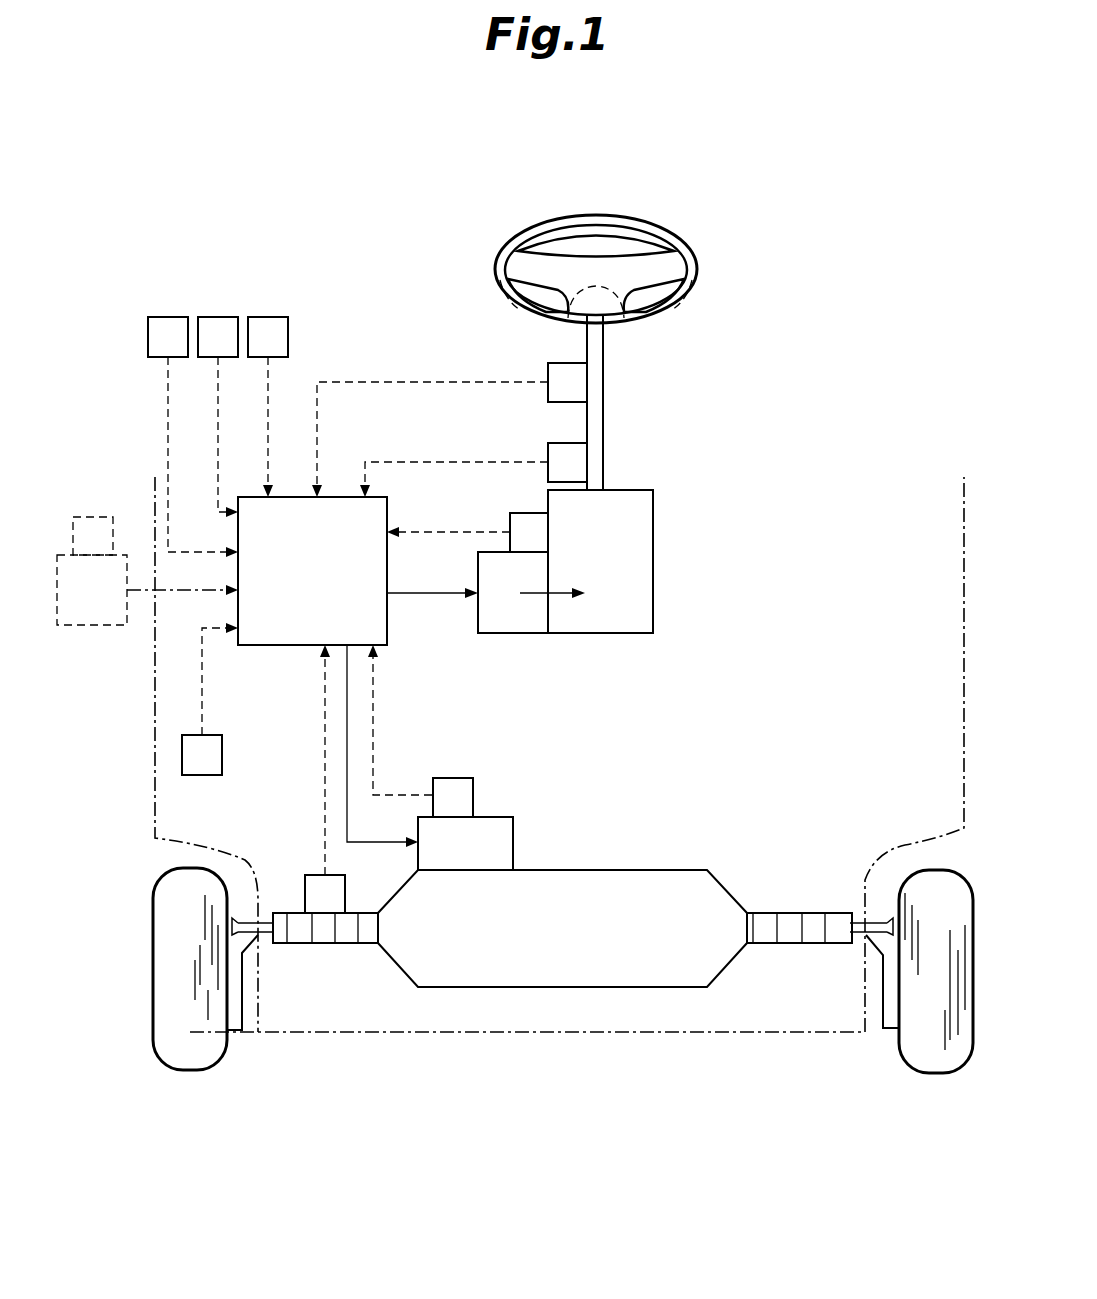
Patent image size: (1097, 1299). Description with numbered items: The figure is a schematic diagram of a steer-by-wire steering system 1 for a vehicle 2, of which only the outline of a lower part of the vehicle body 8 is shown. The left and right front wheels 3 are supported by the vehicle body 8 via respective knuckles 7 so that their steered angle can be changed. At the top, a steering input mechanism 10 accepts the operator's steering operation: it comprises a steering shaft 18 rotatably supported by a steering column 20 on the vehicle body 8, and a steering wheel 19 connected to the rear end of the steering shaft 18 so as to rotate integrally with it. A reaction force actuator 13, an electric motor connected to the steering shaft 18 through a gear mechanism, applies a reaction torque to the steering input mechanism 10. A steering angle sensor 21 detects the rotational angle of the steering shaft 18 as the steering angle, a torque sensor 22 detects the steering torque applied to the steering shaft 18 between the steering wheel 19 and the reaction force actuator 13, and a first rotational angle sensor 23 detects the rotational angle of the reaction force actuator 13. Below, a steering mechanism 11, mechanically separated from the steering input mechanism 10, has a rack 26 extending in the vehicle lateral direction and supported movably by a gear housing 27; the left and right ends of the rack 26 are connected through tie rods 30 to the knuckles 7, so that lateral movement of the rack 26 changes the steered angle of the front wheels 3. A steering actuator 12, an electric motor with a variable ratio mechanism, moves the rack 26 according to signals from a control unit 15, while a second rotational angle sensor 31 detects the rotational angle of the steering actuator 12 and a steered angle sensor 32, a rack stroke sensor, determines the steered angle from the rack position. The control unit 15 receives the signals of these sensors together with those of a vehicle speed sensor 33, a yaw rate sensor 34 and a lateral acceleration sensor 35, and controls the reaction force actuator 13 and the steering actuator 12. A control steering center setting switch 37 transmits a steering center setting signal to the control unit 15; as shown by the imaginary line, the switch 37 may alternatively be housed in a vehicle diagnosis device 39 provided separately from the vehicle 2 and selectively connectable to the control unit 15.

The steering system 1 is at (478, 223).
The vehicle 2 is at (296, 145).
The front wheels 3 is at (185, 1071).
The knuckles 7 is at (247, 1032).
The vehicle body 8 is at (750, 1034).
The steering input mechanism 10 is at (645, 253).
The steering mechanism 11 is at (547, 934).
The steering actuator 12 is at (513, 840).
The reaction force actuator 13 is at (513, 634).
The control unit 15 is at (258, 648).
The steering shaft 18 is at (600, 404).
The steering wheel 19 is at (668, 300).
The steering column 20 is at (655, 525).
The steering angle sensor 21 is at (560, 363).
The torque sensor 22 is at (560, 443).
The first rotational angle sensor 23 is at (532, 513).
The rack 26 is at (787, 945).
The gear housing 27 is at (607, 985).
The tie rods 30 is at (272, 945).
The second rotational angle sensor 31 is at (473, 797).
The steered angle sensor 32 is at (305, 890).
The vehicle speed sensor 33 is at (272, 317).
The yaw rate sensor 34 is at (216, 317).
The lateral acceleration sensor 35 is at (165, 317).
The control steering center setting switch 37 is at (95, 517).
The vehicle diagnosis device 39 is at (93, 625).